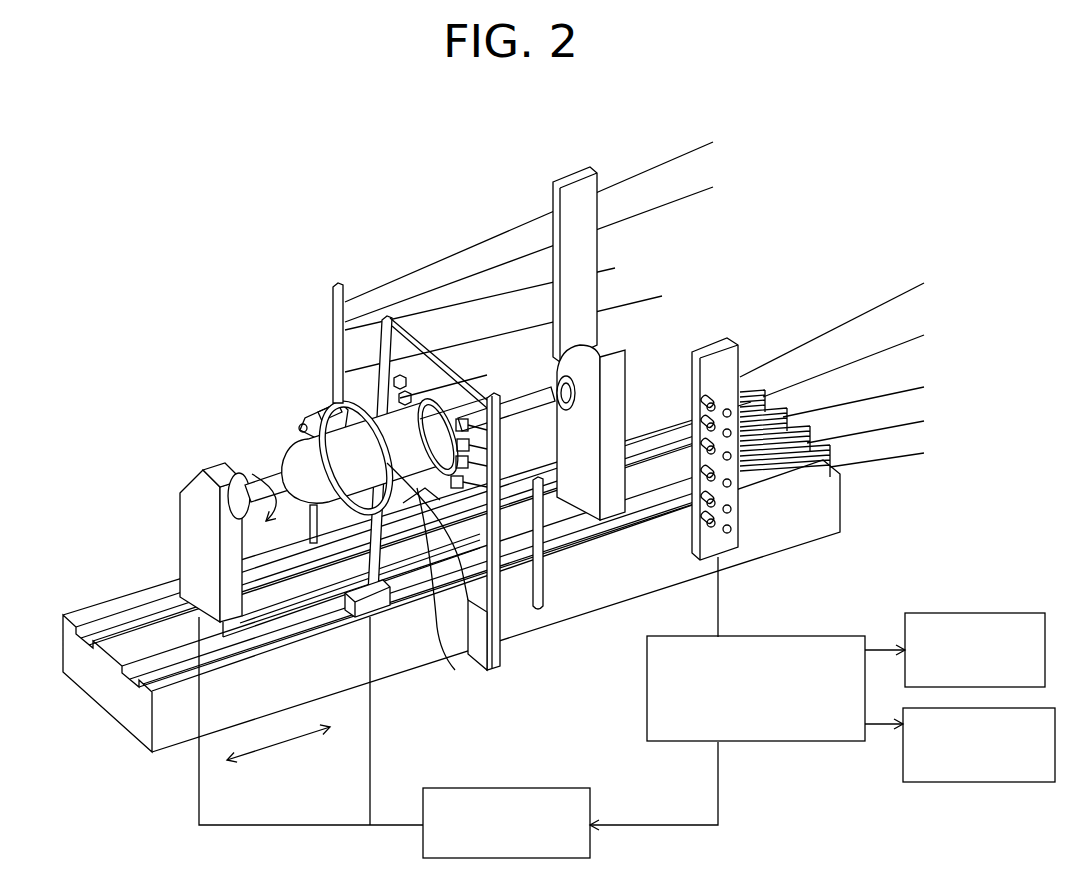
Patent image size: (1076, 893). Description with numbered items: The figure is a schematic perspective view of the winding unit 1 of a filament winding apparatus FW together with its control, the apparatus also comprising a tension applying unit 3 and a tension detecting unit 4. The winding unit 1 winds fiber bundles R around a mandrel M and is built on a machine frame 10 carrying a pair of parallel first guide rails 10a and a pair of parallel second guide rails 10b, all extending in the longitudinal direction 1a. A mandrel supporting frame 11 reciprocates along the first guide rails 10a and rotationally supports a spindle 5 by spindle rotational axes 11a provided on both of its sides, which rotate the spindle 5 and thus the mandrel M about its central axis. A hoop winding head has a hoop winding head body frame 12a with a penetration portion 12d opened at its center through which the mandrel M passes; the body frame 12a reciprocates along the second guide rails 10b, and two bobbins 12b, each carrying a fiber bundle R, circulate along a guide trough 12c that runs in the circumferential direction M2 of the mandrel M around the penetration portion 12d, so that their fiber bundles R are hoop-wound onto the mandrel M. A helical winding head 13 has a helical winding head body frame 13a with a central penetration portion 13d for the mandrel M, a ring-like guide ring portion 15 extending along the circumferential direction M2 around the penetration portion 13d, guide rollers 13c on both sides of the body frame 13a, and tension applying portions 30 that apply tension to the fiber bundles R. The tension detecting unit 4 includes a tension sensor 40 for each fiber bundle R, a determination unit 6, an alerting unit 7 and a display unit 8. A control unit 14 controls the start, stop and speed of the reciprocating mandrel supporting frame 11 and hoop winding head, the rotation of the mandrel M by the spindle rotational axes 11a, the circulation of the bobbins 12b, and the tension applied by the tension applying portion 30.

The winding unit 1 is at (213, 322).
The longitudinal direction 1a is at (283, 743).
The tension applying unit 3 is at (393, 318).
The tension detecting unit 4 is at (710, 333).
The tailstock 5 is at (540, 410).
The determination unit 6 is at (757, 742).
The alerting unit 7 is at (962, 783).
The display unit 8 is at (956, 612).
The machine frame 10 is at (453, 539).
The first guide rails 10a is at (130, 627).
The second guide rails 10b is at (820, 453).
The mandrel supporting frame 11 is at (190, 527).
The spindle rotational axes 11a is at (233, 478).
The hoop winding head body frame 12a is at (390, 617).
The bobbins 12b is at (303, 410).
The guide trough 12c is at (343, 517).
The penetration portion 12d is at (303, 443).
The helical winding head 13 is at (553, 284).
The helical winding head body frame 13a is at (478, 642).
The guide rollers 13c is at (333, 290).
The penetration portion 13d is at (553, 322).
The control unit 14 is at (583, 790).
The guide ring portion 15 is at (458, 403).
The tension applying portion 30 is at (403, 370).
The tension sensors 40 is at (687, 378).
The filament winding apparatus FW is at (163, 157).
The mandrel M is at (455, 670).
The circumferential direction M2 is at (250, 468).
The fiber bundles R is at (648, 185).